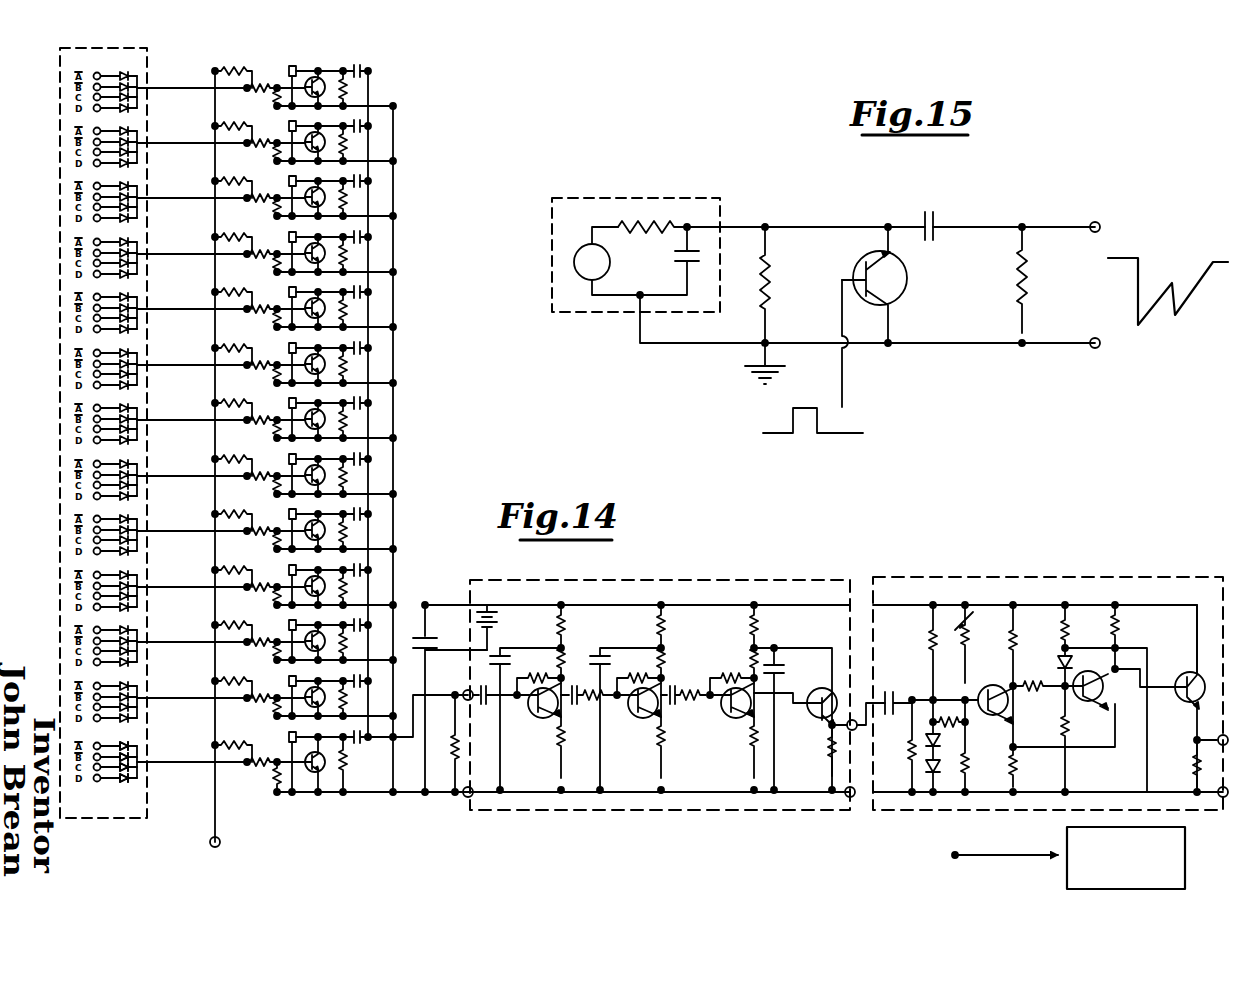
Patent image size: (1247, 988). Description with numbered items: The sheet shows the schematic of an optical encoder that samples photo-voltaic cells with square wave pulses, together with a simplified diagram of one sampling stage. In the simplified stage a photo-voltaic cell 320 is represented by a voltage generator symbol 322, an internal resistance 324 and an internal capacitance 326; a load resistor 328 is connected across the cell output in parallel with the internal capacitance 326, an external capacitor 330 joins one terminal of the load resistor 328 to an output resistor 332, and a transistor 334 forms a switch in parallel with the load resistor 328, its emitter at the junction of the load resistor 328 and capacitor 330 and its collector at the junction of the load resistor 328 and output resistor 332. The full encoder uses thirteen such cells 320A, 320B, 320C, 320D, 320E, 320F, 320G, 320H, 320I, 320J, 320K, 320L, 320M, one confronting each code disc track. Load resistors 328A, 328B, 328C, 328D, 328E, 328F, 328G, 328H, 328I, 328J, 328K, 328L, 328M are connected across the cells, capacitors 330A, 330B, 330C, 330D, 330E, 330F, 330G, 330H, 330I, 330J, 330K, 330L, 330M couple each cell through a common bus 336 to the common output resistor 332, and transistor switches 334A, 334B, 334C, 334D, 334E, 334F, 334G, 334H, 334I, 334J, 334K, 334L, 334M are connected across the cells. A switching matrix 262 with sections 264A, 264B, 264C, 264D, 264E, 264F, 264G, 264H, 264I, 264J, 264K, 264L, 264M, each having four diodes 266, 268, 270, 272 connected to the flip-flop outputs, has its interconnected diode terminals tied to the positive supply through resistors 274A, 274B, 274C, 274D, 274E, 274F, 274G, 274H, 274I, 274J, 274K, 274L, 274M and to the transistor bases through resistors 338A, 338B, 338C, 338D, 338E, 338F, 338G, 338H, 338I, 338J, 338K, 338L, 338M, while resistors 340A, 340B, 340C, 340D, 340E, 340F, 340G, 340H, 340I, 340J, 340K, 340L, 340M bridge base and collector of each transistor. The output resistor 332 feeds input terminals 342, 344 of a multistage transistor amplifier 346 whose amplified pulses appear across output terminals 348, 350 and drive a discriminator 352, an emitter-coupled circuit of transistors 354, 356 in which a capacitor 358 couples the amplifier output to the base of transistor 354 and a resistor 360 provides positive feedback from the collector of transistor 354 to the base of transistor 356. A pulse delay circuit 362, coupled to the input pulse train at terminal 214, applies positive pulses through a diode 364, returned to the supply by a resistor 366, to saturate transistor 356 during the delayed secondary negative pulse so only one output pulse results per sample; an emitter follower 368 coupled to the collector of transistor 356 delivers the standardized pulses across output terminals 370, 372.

In FIG. 14, the switching matrix 262 is at (55, 246).
In FIG. 14, the section of switching matrix 264A is at (140, 790).
In FIG. 14, the section of switching matrix 264B is at (138, 696).
In FIG. 14, the section of switching matrix 264C is at (138, 640).
In FIG. 14, the section of switching matrix 264D is at (139, 585).
In FIG. 14, the section of switching matrix 264E is at (138, 529).
In FIG. 14, the section of switching matrix 264F is at (138, 474).
In FIG. 14, the section of switching matrix 264G is at (139, 418).
In FIG. 14, the section of switching matrix 264H is at (139, 363).
In FIG. 14, the section of switching matrix 264I is at (138, 307).
In FIG. 14, the section of switching matrix 264J is at (135, 252).
In FIG. 14, the section of switching matrix 264K is at (139, 196).
In FIG. 14, the section of switching matrix 264L is at (137, 141).
In FIG. 14, the section of switching matrix 264M is at (140, 85).
In FIG. 14, the diode 266 is at (128, 783).
In FIG. 14, the diode 268 is at (133, 770).
In FIG. 14, the diode 270 is at (133, 757).
In FIG. 14, the diode 272 is at (137, 742).
In FIG. 14, the resistor 274A is at (228, 741).
In FIG. 14, the resistor 274B is at (212, 688).
In FIG. 14, the resistor 274C is at (212, 632).
In FIG. 14, the resistor 274D is at (212, 577).
In FIG. 14, the resistor 274E is at (212, 521).
In FIG. 14, the resistor 274F is at (212, 466).
In FIG. 14, the resistor 274G is at (212, 410).
In FIG. 14, the resistor 274H is at (212, 355).
In FIG. 14, the resistor 274I is at (212, 299).
In FIG. 14, the resistor 274J is at (212, 244).
In FIG. 14, the resistor 274K is at (212, 188).
In FIG. 14, the resistor 274L is at (212, 133).
In FIG. 14, the resistor 274M is at (220, 53).
In FIG. 14, the photo-voltaic cell 320A is at (290, 732).
In FIG. 14, the photo-voltaic cell 320B is at (278, 692).
In FIG. 14, the photo-voltaic cell 320C is at (278, 636).
In FIG. 14, the photo-voltaic cell 320D is at (278, 581).
In FIG. 14, the photo-voltaic cell 320E is at (278, 525).
In FIG. 14, the photo-voltaic cell 320F is at (278, 470).
In FIG. 14, the photo-voltaic cell 320G is at (278, 414).
In FIG. 14, the photo-voltaic cell 320H is at (278, 359).
In FIG. 14, the photo-voltaic cell 320I is at (278, 303).
In FIG. 14, the photo-voltaic cell 320J is at (278, 248).
In FIG. 14, the photo-voltaic cell 320K is at (278, 192).
In FIG. 14, the photo-voltaic cell 320L is at (278, 137).
In FIG. 14, the photo-voltaic cell 320M is at (290, 64).
In FIG. 14, the photo-voltaic cell load resistor 328A is at (346, 765).
In FIG. 14, the photocell load resistor 328B is at (371, 698).
In FIG. 14, the photocell load resistor 328C is at (386, 625).
In FIG. 14, the photocell load resistor 328D is at (387, 587).
In FIG. 14, the photocell load resistor 328E is at (386, 531).
In FIG. 14, the photocell load resistor 328F is at (386, 476).
In FIG. 14, the photocell load resistor 328G is at (387, 420).
In FIG. 14, the photocell load resistor 328H is at (387, 365).
In FIG. 14, the photocell load resistor 328I is at (386, 309).
In FIG. 14, the photocell load resistor 328J is at (384, 254).
In FIG. 14, the photocell load resistor 328K is at (387, 198).
In FIG. 14, the photocell load resistor 328L is at (386, 143).
In FIG. 14, the photocell load resistor 328M is at (377, 88).
In FIG. 14, the capacitor 330A is at (360, 745).
In FIG. 14, the capacitor 330B is at (384, 678).
In FIG. 14, the capacitor 330C is at (399, 603).
In FIG. 14, the capacitor 330D is at (400, 567).
In FIG. 14, the capacitor 330E is at (399, 511).
In FIG. 14, the capacitor 330F is at (399, 456).
In FIG. 14, the capacitor 330G is at (400, 400).
In FIG. 14, the capacitor 330H is at (400, 345).
In FIG. 14, the capacitor 330I is at (399, 289).
In FIG. 14, the capacitor 330J is at (396, 234).
In FIG. 14, the capacitor 330K is at (400, 178).
In FIG. 14, the capacitor 330L is at (398, 123).
In FIG. 14, the capacitor 330M is at (395, 63).
In FIG. 14, the transistor 334A is at (322, 772).
In FIG. 14, the transistor 334B is at (321, 692).
In FIG. 14, the transistor 334C is at (321, 636).
In FIG. 14, the transistor 334D is at (322, 581).
In FIG. 14, the transistor 334E is at (321, 525).
In FIG. 14, the transistor 334F is at (321, 470).
In FIG. 14, the transistor 334G is at (322, 414).
In FIG. 14, the transistor 334H is at (322, 359).
In FIG. 14, the transistor 334I is at (319, 303).
In FIG. 14, the transistor 334J is at (319, 248).
In FIG. 14, the transistor 334K is at (322, 192).
In FIG. 14, the transistor 334L is at (320, 137).
In FIG. 14, the transistor 334M is at (344, 70).
In FIG. 14, the common bus 336 is at (372, 101).
In FIG. 14, the resistor 338A is at (262, 769).
In FIG. 14, the resistor 338B is at (264, 690).
In FIG. 14, the resistor 338C is at (264, 634).
In FIG. 14, the resistor 338D is at (264, 579).
In FIG. 14, the resistor 338E is at (263, 523).
In FIG. 14, the resistor 338F is at (263, 468).
In FIG. 14, the resistor 338G is at (264, 412).
In FIG. 14, the resistor 338H is at (264, 357).
In FIG. 14, the resistor 338I is at (262, 301).
In FIG. 14, the resistor 338J is at (262, 246).
In FIG. 14, the resistor 338K is at (264, 190).
In FIG. 14, the resistor 338L is at (263, 135).
In FIG. 14, the resistor 338M is at (264, 71).
In FIG. 14, the resistor 340A is at (274, 785).
In FIG. 14, the resistor 340B is at (252, 710).
In FIG. 14, the resistor 340C is at (252, 654).
In FIG. 14, the resistor 340D is at (252, 599).
In FIG. 14, the resistor 340E is at (252, 543).
In FIG. 14, the resistor 340F is at (252, 488).
In FIG. 14, the resistor 340G is at (252, 432).
In FIG. 14, the resistor 340H is at (252, 377).
In FIG. 14, the resistor 340I is at (252, 321).
In FIG. 14, the resistor 340J is at (252, 266).
In FIG. 14, the resistor 340K is at (252, 210).
In FIG. 14, the resistor 340L is at (252, 155).
In FIG. 14, the resistor 340M is at (255, 100).
In FIG. 14, the input terminal 342 is at (465, 689).
In FIG. 14, the input terminal 344 is at (465, 798).
In FIG. 14, the multistage transistor amplifier 346 is at (625, 812).
In FIG. 14, the output terminal 348 is at (854, 718).
In FIG. 14, the output terminal 350 is at (846, 798).
In FIG. 14, the discriminator 352 is at (946, 808).
In FIG. 14, the transistor 354 is at (993, 685).
In FIG. 14, the transistor 356 is at (1108, 692).
In FIG. 14, the capacitor 358 is at (893, 690).
In FIG. 14, the resistor 360 is at (1042, 690).
In FIG. 14, the pulse delay circuit 362 is at (1067, 836).
In FIG. 14, the diode 364 is at (1058, 660).
In FIG. 14, the resistor 366 is at (1068, 625).
In FIG. 14, the emitter follower 368 is at (1190, 670).
In FIG. 14, the output terminal 370 is at (1205, 738).
In FIG. 14, the output terminal 372 is at (1222, 798).
In FIG. 14, the terminal 214 is at (953, 857).
In FIG. 15, the photo-voltaic cell 320 is at (619, 196).
In FIG. 15, the voltage generator symbol 322 is at (584, 282).
In FIG. 15, the internal resistance 324 is at (655, 222).
In FIG. 15, the internal capacitance 326 is at (700, 250).
In FIG. 15, the load resistor 328 is at (772, 285).
In FIG. 15, the external capacitor 330 is at (935, 212).
In FIG. 14, the output resistor 332 is at (454, 742).
In FIG. 15, the output resistor 332 is at (1015, 278).
In FIG. 15, the transistor 334 is at (878, 250).